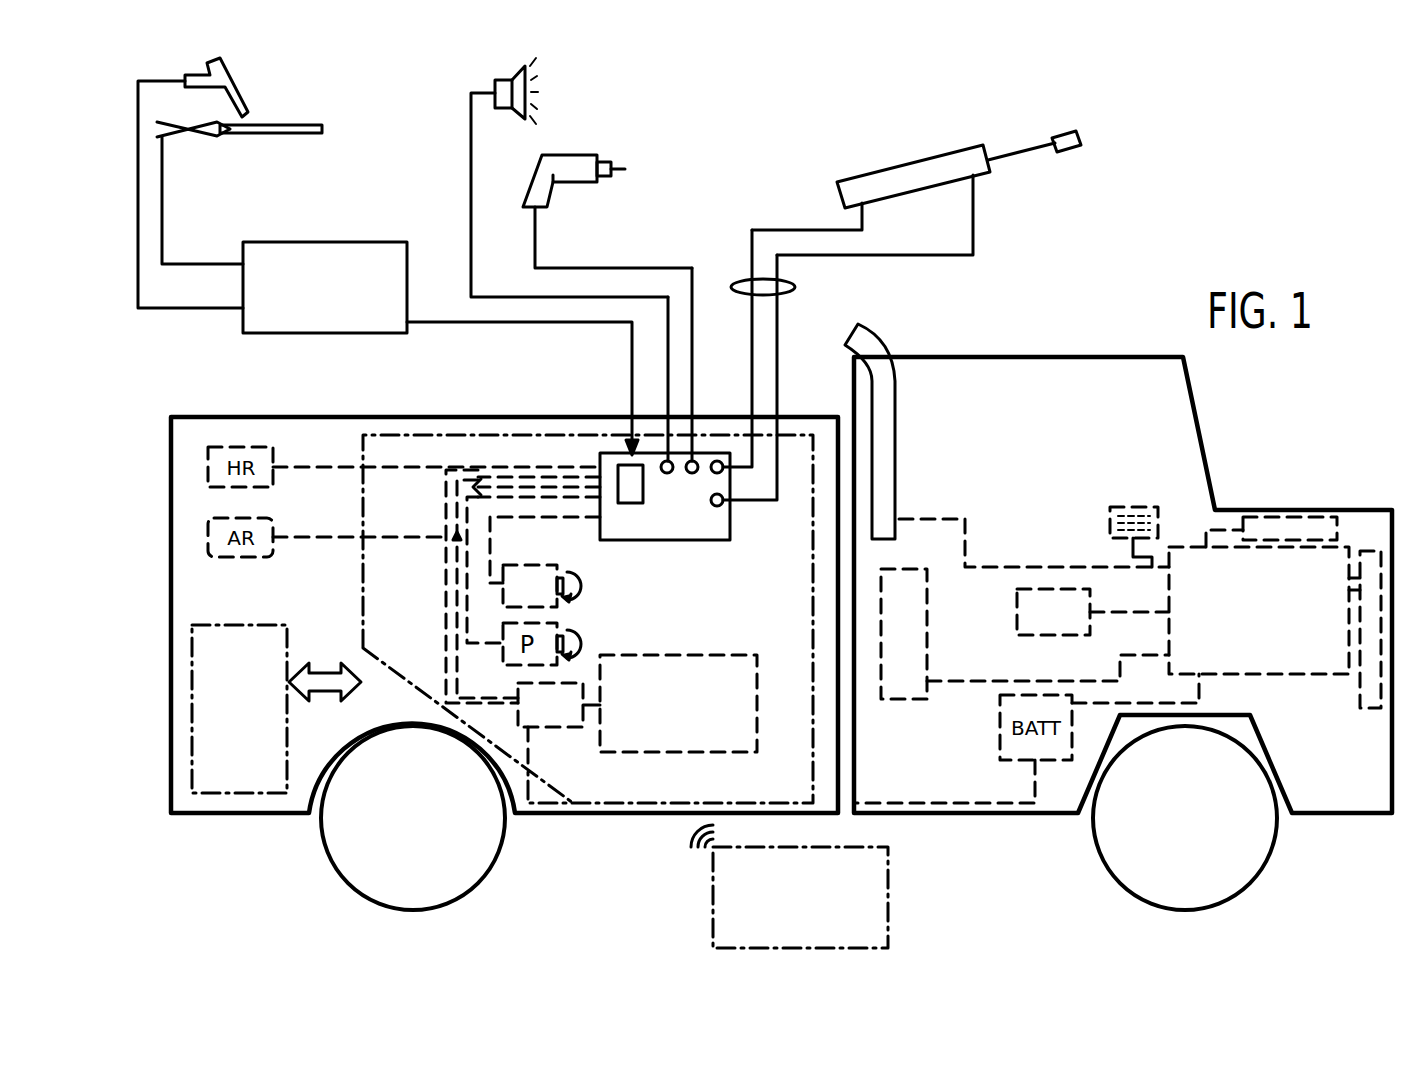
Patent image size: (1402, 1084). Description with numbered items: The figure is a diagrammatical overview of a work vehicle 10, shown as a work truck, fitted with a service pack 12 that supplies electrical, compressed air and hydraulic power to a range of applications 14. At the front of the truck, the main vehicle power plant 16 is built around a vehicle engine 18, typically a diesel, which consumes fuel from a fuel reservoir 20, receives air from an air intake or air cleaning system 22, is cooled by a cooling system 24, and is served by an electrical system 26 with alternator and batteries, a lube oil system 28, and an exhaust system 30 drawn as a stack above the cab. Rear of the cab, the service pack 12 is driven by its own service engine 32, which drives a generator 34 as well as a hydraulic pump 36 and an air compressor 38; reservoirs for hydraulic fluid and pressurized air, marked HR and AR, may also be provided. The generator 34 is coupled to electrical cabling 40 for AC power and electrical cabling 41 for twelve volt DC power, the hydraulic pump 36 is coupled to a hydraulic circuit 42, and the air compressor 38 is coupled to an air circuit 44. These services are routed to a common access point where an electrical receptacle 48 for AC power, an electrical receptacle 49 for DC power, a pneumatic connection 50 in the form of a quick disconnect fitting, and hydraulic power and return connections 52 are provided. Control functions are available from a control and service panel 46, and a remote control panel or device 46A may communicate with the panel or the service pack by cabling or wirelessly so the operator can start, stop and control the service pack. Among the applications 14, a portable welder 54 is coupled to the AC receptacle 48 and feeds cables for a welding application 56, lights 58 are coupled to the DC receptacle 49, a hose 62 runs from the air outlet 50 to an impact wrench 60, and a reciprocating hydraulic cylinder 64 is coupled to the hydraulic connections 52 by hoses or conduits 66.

The work vehicle 10 is at (250, 848).
The service pack 12 is at (363, 607).
The applications 14 is at (1012, 224).
The main vehicle power plant 16 is at (1228, 440).
The vehicle engine 18 is at (1255, 672).
The fuel reservoir 20 is at (905, 699).
The air intake or air cleaning system 22 is at (1263, 517).
The cooling system 24 is at (1370, 708).
The electrical system 26 is at (1108, 521).
The lube oil system 28 is at (1017, 601).
The exhaust system 30 is at (893, 455).
The service engine 32 is at (658, 655).
The generator 34 is at (550, 727).
The hydraulic pump 36 is at (523, 668).
The air compressor 38 is at (518, 563).
The electrical cabling 40 is at (447, 633).
The electrical cabling 41 is at (457, 670).
The hydraulic circuit 42 is at (467, 585).
The air circuit 44 is at (487, 530).
The control and service panel 46 is at (238, 623).
The remote control panel or device 46A is at (890, 897).
The electrical receptacle 48 is at (618, 478).
The electrical receptacle 49 is at (664, 458).
The pneumatic connection 50 is at (698, 462).
The hydraulic power and return connections 52 is at (722, 470).
The portable welder 54 is at (338, 242).
The welding application 56 is at (293, 122).
The lights 58 is at (497, 77).
The impact wrench 60 is at (573, 155).
The hose 62 is at (613, 267).
The reciprocating hydraulic cylinder 64 is at (915, 162).
The hoses or conduits 66 is at (738, 285).